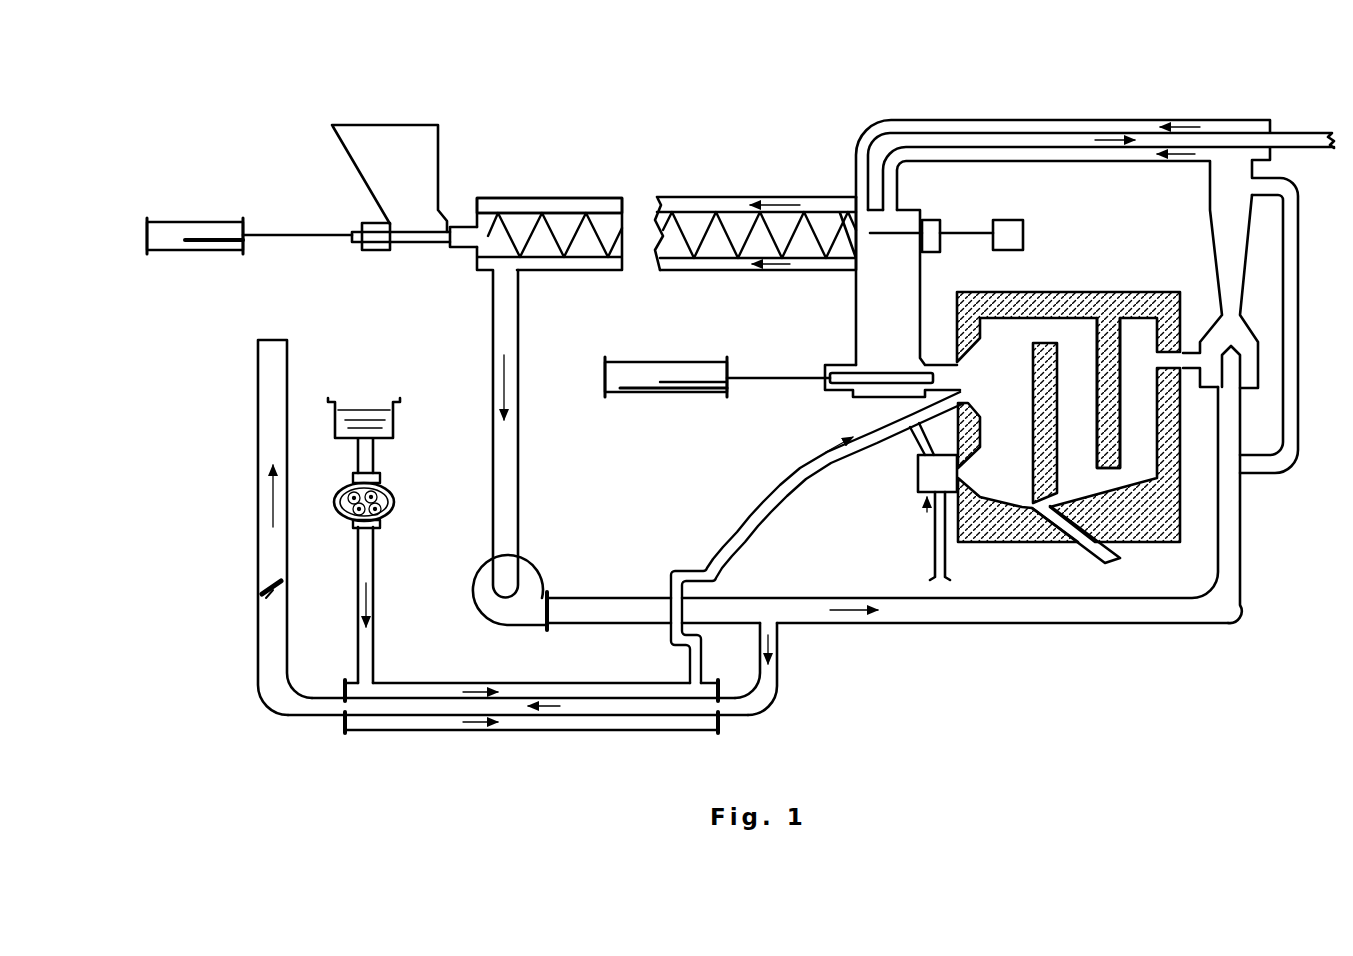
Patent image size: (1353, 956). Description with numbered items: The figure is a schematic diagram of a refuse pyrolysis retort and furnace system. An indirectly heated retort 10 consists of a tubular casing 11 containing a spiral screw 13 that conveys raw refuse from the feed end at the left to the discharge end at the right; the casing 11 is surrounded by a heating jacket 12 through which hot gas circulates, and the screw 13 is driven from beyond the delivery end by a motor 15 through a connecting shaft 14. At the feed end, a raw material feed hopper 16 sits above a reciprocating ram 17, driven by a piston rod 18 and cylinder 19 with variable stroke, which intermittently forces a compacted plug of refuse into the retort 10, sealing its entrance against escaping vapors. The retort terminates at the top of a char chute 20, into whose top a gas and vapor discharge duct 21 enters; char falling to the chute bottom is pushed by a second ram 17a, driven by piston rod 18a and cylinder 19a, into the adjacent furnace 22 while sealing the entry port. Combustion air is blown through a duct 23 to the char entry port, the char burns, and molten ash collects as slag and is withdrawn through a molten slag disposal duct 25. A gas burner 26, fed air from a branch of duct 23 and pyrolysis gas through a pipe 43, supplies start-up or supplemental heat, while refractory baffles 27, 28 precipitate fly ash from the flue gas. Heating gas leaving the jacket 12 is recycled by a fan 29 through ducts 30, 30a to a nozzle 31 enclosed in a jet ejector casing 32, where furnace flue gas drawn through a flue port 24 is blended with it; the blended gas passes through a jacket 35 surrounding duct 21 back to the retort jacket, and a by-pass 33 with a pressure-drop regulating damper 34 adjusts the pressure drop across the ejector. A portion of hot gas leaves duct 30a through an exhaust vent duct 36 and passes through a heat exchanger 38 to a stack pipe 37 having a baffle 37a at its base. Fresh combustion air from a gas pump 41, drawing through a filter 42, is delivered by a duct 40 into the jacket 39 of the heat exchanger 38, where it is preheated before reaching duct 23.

The retort 10 is at (744, 273).
The tubular casing 11 is at (590, 262).
The heating jacket 12 is at (550, 263).
The spiral screw 13 is at (558, 232).
The connecting shaft 14 is at (959, 232).
The motor 15 is at (1025, 236).
The raw material feed hopper 16 is at (403, 176).
The reciprocating ram 17 is at (420, 248).
The ram 17a is at (875, 373).
The piston rod 18 is at (286, 235).
The piston rod 18a is at (762, 376).
The cylinder 19 is at (190, 230).
The cylinder 19a is at (665, 376).
The char chute 20 is at (900, 304).
The gas and vapor discharge duct 21 is at (1292, 133).
The furnace 22 is at (1007, 397).
The duct 23 is at (766, 512).
The flue port 24 is at (1191, 350).
The molten slag disposal duct 25 is at (1092, 558).
The gas burner 26 is at (918, 478).
The refractory baffle 27 is at (1058, 396).
The refractory baffle 28 is at (1097, 430).
The fan 29 is at (475, 584).
The duct 30 is at (520, 437).
The duct 30a is at (625, 598).
The nozzle 31 is at (1238, 354).
The jet ejector casing 32 is at (1244, 347).
The by-pass 33 is at (1300, 455).
The pressure-drop regulating damper 34 is at (1290, 382).
The jacket 35 is at (1085, 131).
The exhaust vent duct 36 is at (780, 665).
The stack pipe 37 is at (258, 441).
The baffle 37a is at (260, 582).
The heat exchanger 38 is at (590, 722).
The jacket 39 is at (598, 690).
The duct 40 is at (373, 645).
The gas pump 41 is at (391, 495).
The filter 42 is at (393, 424).
The pipe 43 is at (935, 557).